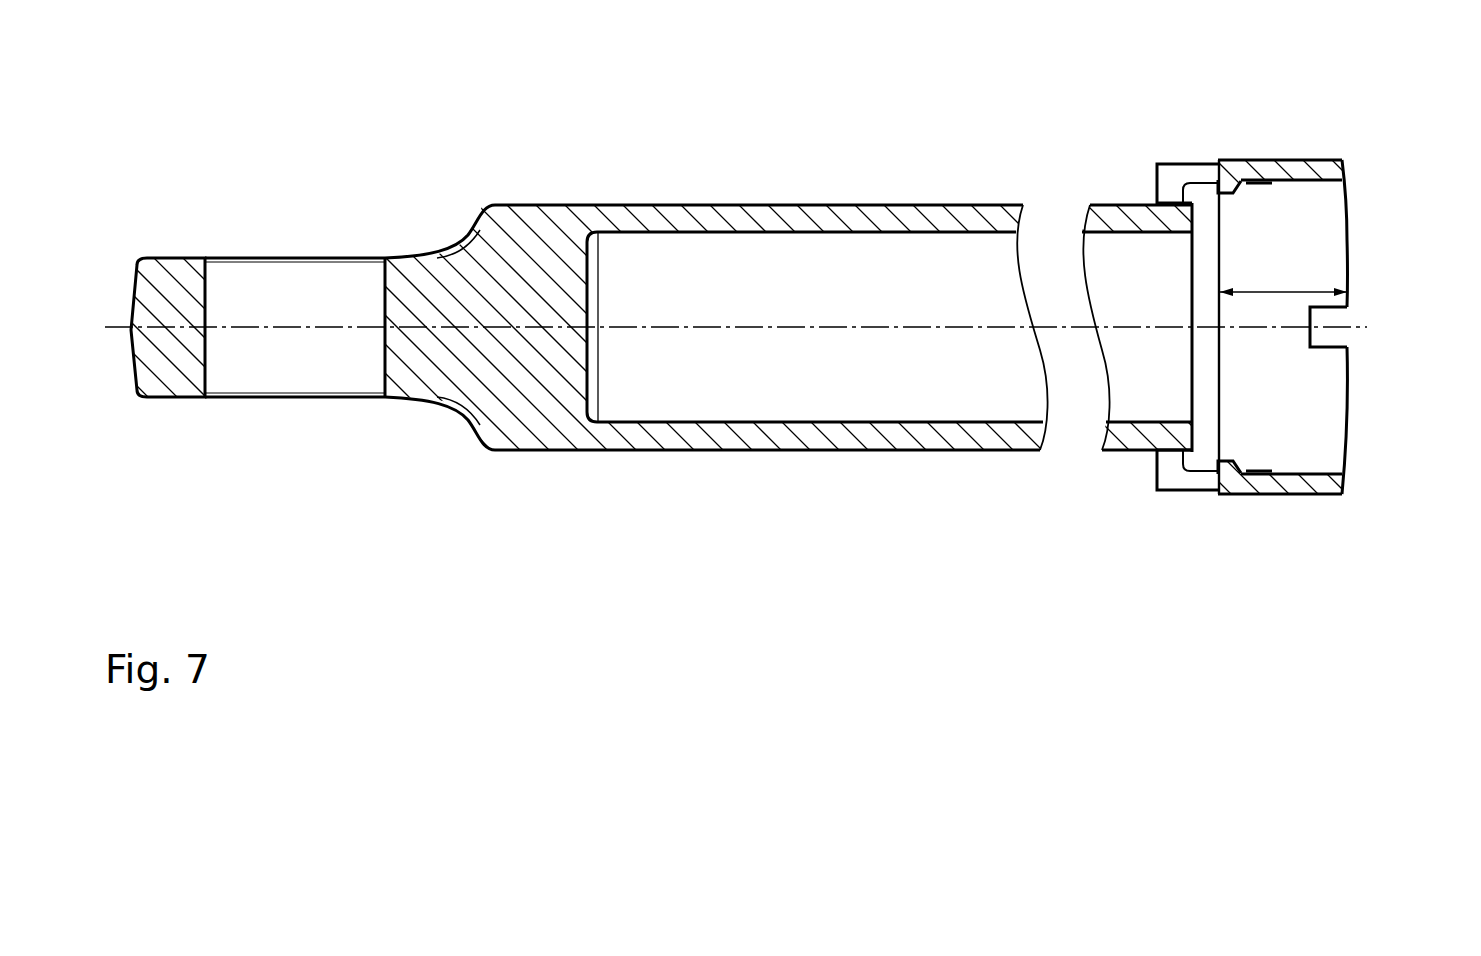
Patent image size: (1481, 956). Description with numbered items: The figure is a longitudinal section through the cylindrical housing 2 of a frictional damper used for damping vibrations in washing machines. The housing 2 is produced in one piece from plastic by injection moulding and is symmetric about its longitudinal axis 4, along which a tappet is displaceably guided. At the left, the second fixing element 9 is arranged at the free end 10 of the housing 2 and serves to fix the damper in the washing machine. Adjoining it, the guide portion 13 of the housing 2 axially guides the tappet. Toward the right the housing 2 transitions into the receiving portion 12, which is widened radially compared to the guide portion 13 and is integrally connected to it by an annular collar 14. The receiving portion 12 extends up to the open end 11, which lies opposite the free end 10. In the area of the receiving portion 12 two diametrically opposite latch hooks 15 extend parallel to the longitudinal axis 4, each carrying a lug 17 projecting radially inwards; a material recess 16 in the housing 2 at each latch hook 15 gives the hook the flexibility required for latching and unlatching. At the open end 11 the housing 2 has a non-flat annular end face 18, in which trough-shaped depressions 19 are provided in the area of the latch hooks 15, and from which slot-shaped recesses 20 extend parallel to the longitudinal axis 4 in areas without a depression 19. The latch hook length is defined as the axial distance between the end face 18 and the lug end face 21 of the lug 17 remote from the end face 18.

The housing 2 is at (702, 196).
The longitudinal axis 4 is at (782, 325).
The second fixing element 9 is at (185, 270).
The free end 10 is at (341, 250).
The open end 11 is at (1370, 443).
The receiving portion 12 is at (1166, 178).
The guide portion 13 is at (922, 218).
The annular collar 14 is at (1193, 373).
The latch hook 15 is at (1276, 163).
The material recess 16 is at (1180, 497).
The lug 17 is at (1228, 492).
The end face 18 is at (1349, 271).
The depression 19 is at (1349, 211).
The recess 20 is at (1332, 321).
The lug end face 21 is at (1210, 168).